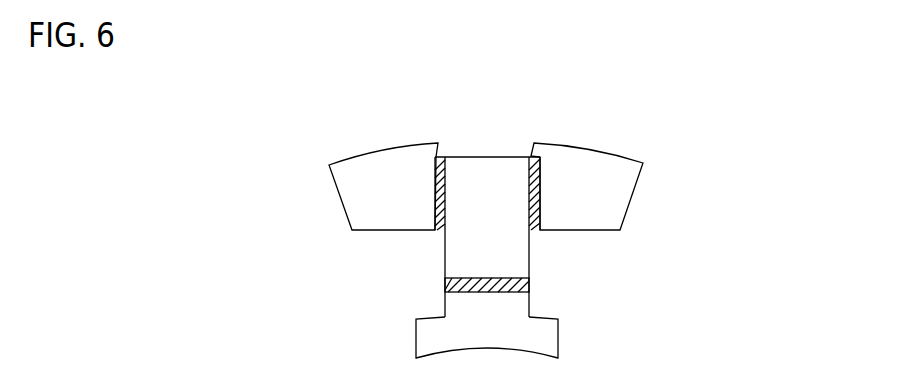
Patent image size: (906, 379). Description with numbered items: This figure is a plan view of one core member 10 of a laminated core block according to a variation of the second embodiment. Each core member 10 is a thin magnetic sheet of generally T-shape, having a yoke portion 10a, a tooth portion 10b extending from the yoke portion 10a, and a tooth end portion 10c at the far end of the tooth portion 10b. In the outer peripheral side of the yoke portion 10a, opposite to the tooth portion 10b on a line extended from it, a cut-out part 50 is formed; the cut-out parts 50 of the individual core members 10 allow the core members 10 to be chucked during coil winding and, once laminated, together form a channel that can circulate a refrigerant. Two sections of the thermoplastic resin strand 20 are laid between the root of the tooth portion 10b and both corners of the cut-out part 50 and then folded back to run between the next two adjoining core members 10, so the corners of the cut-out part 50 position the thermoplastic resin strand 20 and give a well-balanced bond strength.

The core member 10 is at (367, 168).
The yoke portion 10a is at (508, 168).
The tooth portion 10b is at (482, 245).
The tooth end portion 10c is at (433, 330).
The cut-out part 50 is at (480, 157).
The thermoplastic resin strand 20 is at (537, 210).